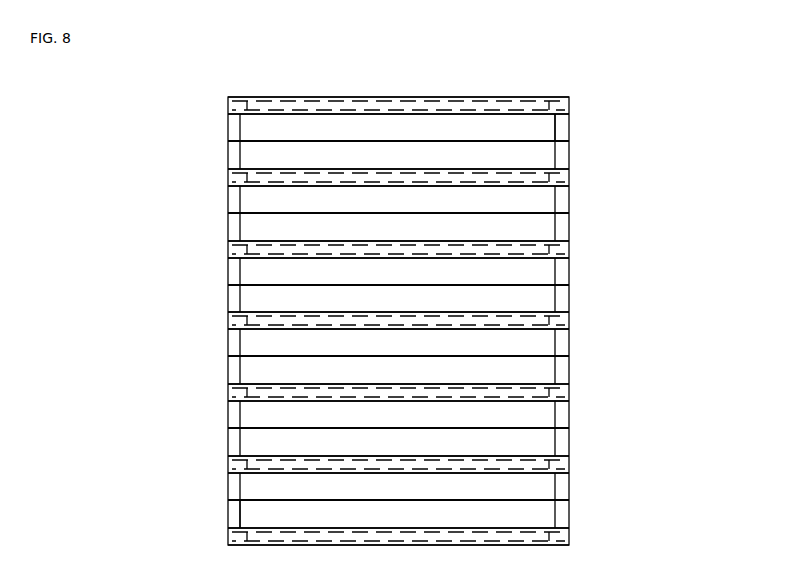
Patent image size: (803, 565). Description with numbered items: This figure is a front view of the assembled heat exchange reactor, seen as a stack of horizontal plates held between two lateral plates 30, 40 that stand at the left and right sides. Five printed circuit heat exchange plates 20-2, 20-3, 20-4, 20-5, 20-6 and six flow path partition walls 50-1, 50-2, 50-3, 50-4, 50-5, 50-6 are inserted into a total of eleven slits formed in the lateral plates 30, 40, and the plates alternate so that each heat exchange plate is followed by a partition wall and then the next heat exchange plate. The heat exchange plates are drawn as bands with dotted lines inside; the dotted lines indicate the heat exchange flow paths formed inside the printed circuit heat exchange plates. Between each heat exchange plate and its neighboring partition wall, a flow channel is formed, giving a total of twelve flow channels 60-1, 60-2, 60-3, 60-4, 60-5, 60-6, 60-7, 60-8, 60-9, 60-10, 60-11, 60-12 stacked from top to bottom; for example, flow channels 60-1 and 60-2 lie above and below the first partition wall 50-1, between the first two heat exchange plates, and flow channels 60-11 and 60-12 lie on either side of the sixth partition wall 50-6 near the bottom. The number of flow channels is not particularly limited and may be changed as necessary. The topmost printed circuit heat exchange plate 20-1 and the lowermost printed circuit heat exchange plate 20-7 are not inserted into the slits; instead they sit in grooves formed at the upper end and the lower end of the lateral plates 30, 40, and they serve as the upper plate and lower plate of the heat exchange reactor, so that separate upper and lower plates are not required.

The topmost printed circuit heat exchange plate 20-1 is at (228, 107).
The printed circuit heat exchange plate 20-2 is at (228, 177).
The printed circuit heat exchange plate 20-3 is at (228, 250).
The printed circuit heat exchange plate 20-4 is at (228, 322).
The printed circuit heat exchange plate 20-5 is at (228, 390).
The printed circuit heat exchange plate 20-6 is at (228, 462).
The lowermost printed circuit heat exchange plate 20-7 is at (228, 534).
The lateral plate 30 is at (236, 515).
The lateral plate 40 is at (559, 127).
The flow path partition wall 50-1 is at (567, 139).
The flow path partition wall 50-2 is at (567, 214).
The flow path partition wall 50-3 is at (567, 283).
The flow path partition wall 50-4 is at (567, 355).
The flow path partition wall 50-5 is at (567, 428).
The flow path partition wall 50-6 is at (567, 500).
The flow channel 60-1 is at (398, 127).
The flow channel 60-2 is at (398, 155).
The flow channel 60-3 is at (398, 199).
The flow channel 60-4 is at (398, 227).
The flow channel 60-5 is at (398, 271).
The flow channel 60-6 is at (398, 298).
The flow channel 60-7 is at (398, 342).
The flow channel 60-8 is at (398, 370).
The flow channel 60-9 is at (398, 414).
The flow channel 60-10 is at (398, 442).
The flow channel 60-11 is at (398, 486).
The flow channel 60-12 is at (398, 514).